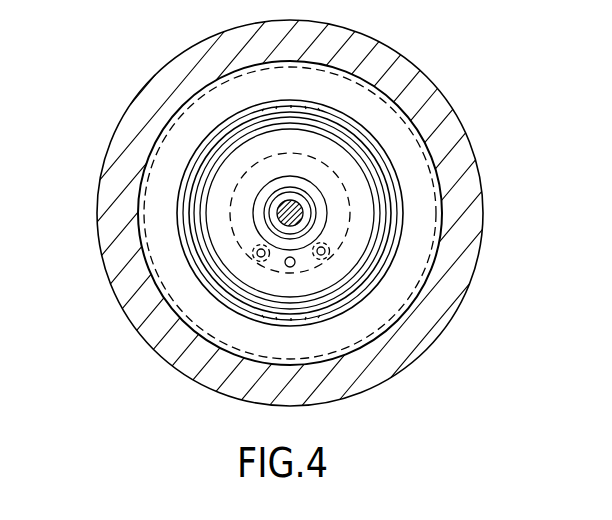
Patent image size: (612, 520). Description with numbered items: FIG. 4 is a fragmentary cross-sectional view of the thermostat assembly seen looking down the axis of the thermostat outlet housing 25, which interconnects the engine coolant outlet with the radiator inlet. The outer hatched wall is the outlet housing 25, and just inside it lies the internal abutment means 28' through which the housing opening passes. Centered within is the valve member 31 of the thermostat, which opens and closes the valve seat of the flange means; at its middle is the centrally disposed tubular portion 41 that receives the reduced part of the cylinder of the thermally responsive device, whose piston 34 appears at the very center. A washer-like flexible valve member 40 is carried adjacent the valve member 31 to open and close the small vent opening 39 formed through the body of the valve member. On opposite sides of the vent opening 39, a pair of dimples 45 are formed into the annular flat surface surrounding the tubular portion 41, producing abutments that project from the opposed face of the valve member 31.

The thermostat outlet housing 25 is at (440, 97).
The internal abutment means 28' is at (345, 213).
The valve member 31 is at (222, 176).
The piston 34 is at (293, 208).
The vent opening 39 is at (284, 266).
The flexible valve member 40 is at (145, 257).
The tubular portion 41 is at (318, 224).
The dimples 45 is at (257, 254).